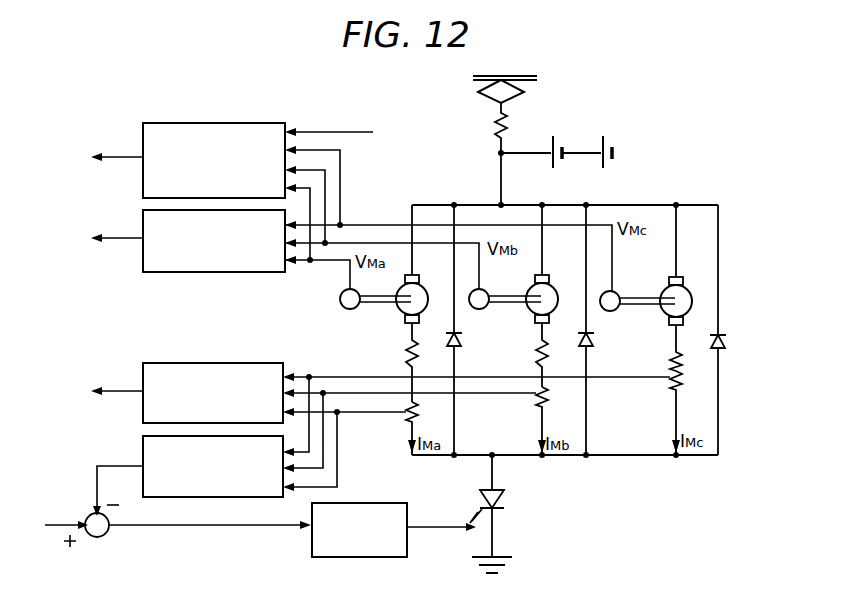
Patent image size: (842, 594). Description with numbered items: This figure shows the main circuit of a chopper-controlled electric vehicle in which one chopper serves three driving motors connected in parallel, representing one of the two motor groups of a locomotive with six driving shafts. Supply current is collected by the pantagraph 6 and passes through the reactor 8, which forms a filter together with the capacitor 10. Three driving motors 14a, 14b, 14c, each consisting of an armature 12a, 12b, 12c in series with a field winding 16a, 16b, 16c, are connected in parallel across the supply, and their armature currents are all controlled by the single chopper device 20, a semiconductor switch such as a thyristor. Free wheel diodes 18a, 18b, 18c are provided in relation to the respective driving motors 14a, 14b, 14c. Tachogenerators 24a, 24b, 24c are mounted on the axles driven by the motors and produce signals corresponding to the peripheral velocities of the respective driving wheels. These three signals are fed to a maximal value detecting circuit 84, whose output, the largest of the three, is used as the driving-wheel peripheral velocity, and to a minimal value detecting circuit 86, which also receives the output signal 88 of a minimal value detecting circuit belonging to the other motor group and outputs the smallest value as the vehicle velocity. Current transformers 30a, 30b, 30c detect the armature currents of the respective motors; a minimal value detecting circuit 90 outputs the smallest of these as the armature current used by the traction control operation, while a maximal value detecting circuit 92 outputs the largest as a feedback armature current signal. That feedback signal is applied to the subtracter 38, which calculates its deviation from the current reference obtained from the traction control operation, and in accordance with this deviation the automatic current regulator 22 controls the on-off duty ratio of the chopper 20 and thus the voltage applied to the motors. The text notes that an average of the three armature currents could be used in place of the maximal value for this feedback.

The pantagraph 6 is at (479, 94).
The reactor 8 is at (490, 120).
The capacitor 10 is at (556, 144).
The armature 12a is at (396, 312).
The armature 12b is at (527, 312).
The armature 12c is at (661, 314).
The driving motor 14a is at (406, 270).
The driving motor 14b is at (536, 270).
The driving motor 14c is at (669, 271).
The field winding 16a is at (404, 352).
The field winding 16b is at (531, 357).
The field winding 16c is at (664, 360).
The free wheel diode 18a is at (460, 340).
The free wheel diode 18b is at (593, 340).
The free wheel diode 18c is at (724, 341).
The chopper device 20 is at (502, 496).
The automatic current regulator 22 is at (367, 503).
The tachogenerator 24a is at (340, 299).
The tachogenerator 24b is at (487, 291).
The tachogenerator 24c is at (614, 291).
The current transformer 30a is at (406, 420).
The current transformer 30b is at (538, 405).
The current transformer 30c is at (667, 387).
The subtracter 38 is at (100, 538).
The maximal value detecting circuit 84 is at (200, 272).
The minimal value detecting circuit 86 is at (215, 122).
The output signal 88 is at (314, 131).
The minimal value detecting circuit 90 is at (220, 363).
The maximal value detecting circuit 92 is at (228, 497).